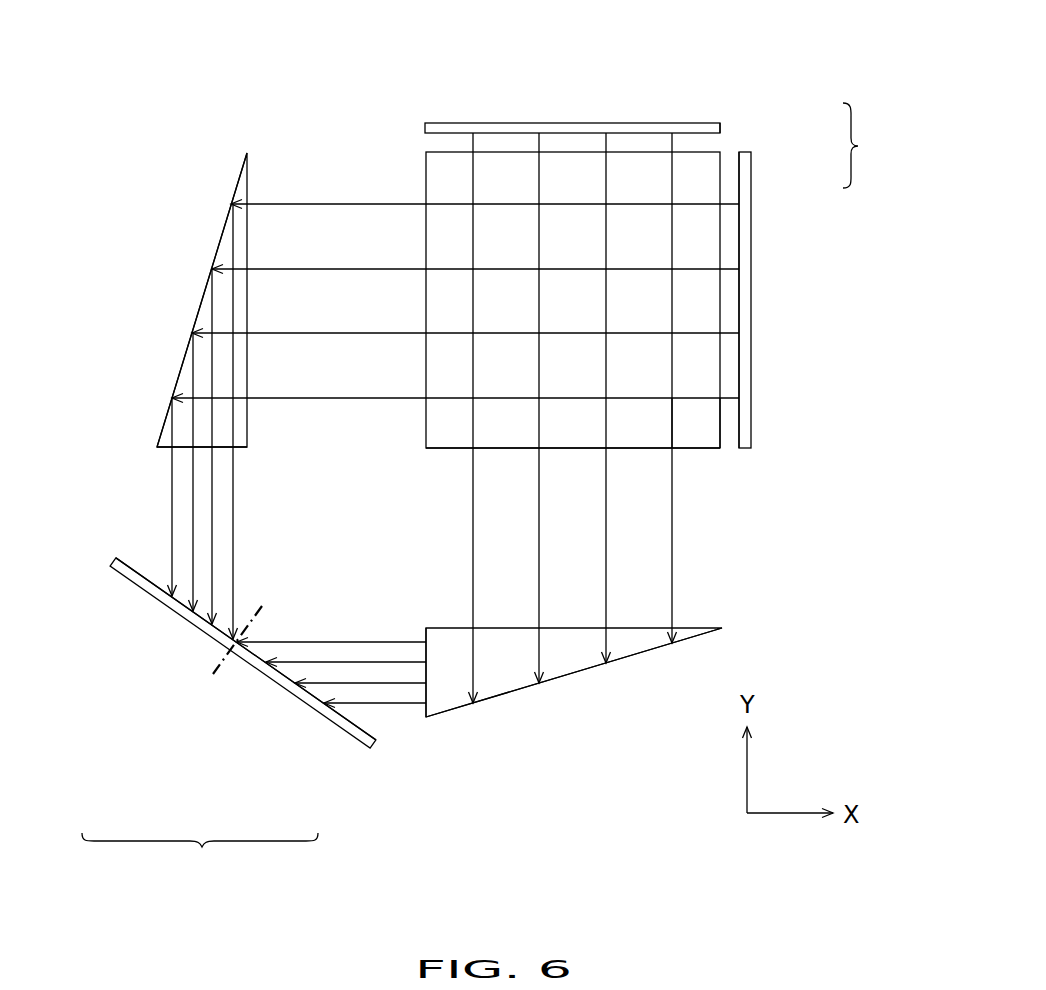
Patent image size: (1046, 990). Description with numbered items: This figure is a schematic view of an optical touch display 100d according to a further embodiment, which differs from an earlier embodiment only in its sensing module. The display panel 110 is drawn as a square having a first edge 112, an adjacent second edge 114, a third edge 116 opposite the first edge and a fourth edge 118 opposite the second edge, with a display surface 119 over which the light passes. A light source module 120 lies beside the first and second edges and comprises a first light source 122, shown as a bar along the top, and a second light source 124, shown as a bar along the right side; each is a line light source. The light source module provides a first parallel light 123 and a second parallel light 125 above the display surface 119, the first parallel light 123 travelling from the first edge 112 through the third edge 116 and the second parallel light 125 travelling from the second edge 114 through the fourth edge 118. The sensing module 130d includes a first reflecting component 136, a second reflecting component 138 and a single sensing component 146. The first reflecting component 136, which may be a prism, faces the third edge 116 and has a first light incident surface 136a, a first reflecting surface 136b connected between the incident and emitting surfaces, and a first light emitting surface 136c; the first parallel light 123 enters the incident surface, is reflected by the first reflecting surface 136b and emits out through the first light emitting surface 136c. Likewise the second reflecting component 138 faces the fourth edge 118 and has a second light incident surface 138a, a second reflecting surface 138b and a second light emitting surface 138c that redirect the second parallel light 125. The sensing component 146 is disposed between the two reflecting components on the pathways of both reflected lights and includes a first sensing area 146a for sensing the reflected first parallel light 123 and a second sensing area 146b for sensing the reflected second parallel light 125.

The optical touch display 100d is at (499, 444).
The display panel 110 is at (713, 440).
The first edge 112 is at (453, 152).
The second edge 114 is at (721, 187).
The third edge 116 is at (714, 452).
The fourth edge 118 is at (426, 165).
The display surface 119 is at (708, 422).
The light source module 120 is at (819, 275).
The first light source 122 is at (720, 128).
The first parallel light 123 is at (473, 145).
The second light source 124 is at (751, 170).
The second parallel light 125 is at (732, 205).
The sensing module 130d is at (450, 499).
The first reflecting component 136 is at (543, 720).
The first light incident surface 136a is at (703, 625).
The first reflecting surface 136b is at (570, 675).
The first light emitting surface 136c is at (427, 695).
The second reflecting component 138 is at (212, 470).
The second light incident surface 138a is at (249, 165).
The second reflecting surface 138b is at (218, 250).
The second light emitting surface 138c is at (187, 447).
The sensing component 146 is at (256, 680).
The first sensing area 146a is at (285, 630).
The second sensing area 146b is at (244, 595).